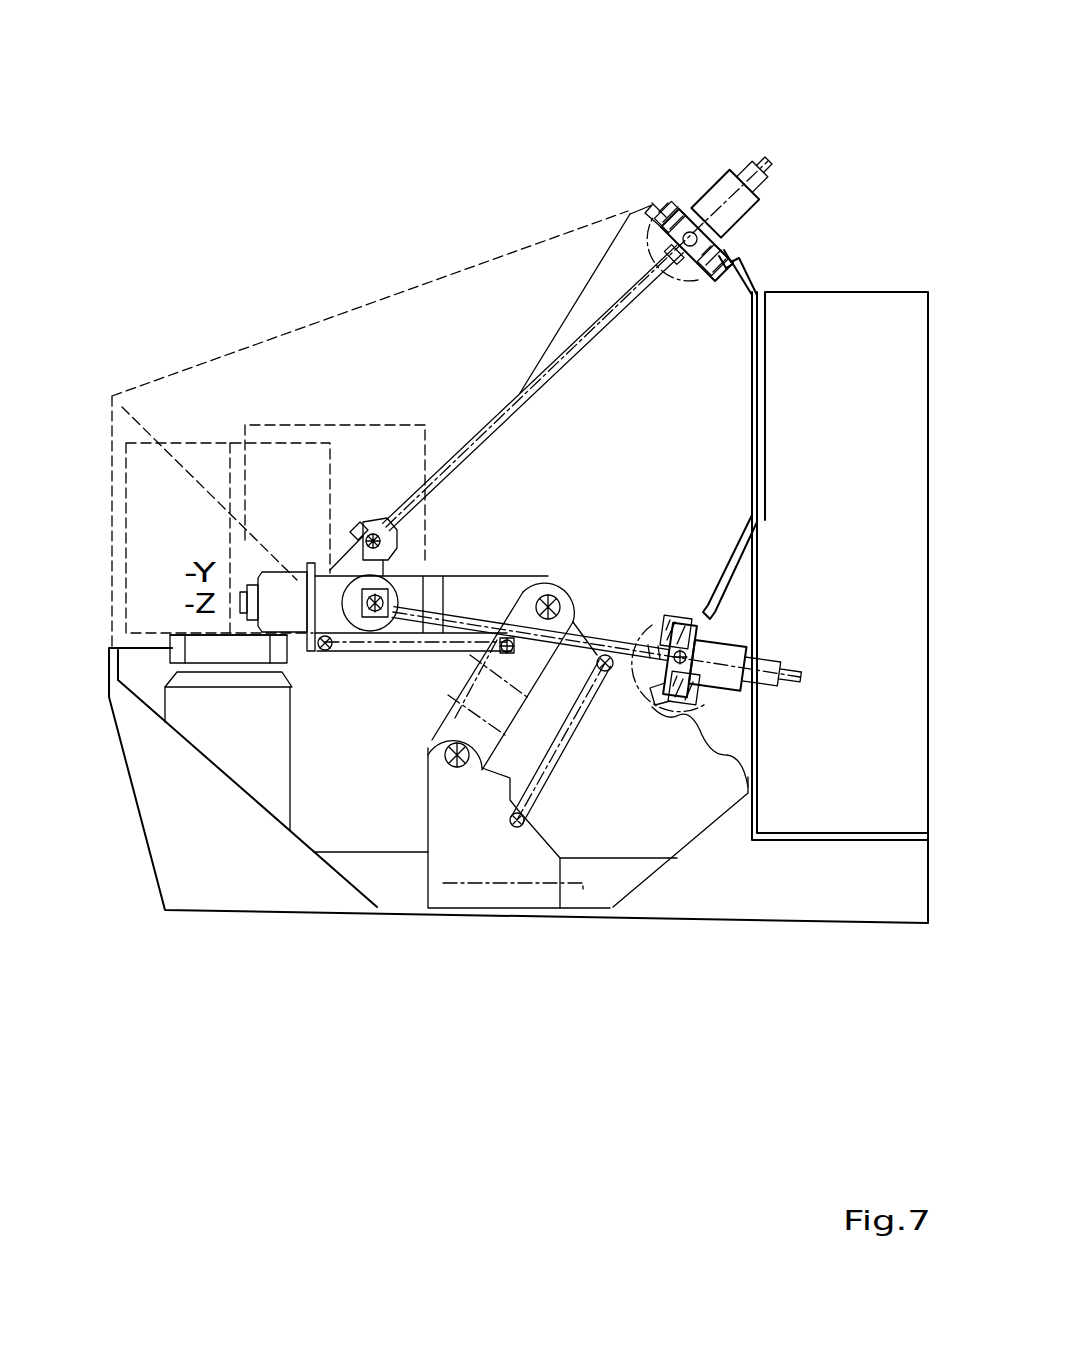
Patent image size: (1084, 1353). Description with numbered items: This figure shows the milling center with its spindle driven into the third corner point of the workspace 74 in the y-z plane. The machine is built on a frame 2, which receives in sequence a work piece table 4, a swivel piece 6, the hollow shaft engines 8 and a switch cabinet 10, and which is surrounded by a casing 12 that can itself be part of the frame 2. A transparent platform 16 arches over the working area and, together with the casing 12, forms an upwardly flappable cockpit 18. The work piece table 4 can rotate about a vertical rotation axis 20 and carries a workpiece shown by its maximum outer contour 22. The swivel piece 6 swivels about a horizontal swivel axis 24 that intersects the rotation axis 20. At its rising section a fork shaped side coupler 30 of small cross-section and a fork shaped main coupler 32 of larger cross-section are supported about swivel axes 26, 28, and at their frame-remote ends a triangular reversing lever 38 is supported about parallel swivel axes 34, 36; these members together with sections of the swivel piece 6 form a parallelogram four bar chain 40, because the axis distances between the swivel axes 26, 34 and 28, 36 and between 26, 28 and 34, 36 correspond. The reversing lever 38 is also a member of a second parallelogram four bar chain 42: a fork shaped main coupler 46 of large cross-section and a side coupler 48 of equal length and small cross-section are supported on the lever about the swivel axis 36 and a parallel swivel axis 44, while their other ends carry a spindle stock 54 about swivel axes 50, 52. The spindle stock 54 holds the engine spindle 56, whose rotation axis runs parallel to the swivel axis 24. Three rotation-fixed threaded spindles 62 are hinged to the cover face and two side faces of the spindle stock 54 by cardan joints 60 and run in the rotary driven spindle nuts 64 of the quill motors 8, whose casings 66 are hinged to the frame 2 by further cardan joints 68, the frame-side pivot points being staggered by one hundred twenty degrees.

The frame 2 is at (185, 875).
The work piece table 4 is at (244, 653).
The swivel piece 6 is at (548, 893).
The hollow shaft engines 8 is at (778, 142).
The switch cabinet 10 is at (795, 322).
The casing 12 is at (728, 548).
The transparent platform 16 is at (509, 252).
The cockpit 18 is at (188, 328).
The vertical rotation axis 20 is at (227, 698).
The maximum outer contour 22 is at (185, 438).
The horizontal swivel axis 24 is at (576, 705).
The swivel axis 26 is at (503, 665).
The swivel axis 28 is at (448, 700).
The side coupler 30 is at (640, 720).
The main coupler 32 is at (612, 676).
The swivel axis 34 is at (683, 757).
The swivel axis 36 is at (541, 588).
The reversing lever 38 is at (585, 582).
The four bar chain 40 is at (490, 760).
The four bar chain 42 is at (479, 590).
The swivel axis 44 is at (485, 670).
The main coupler 46 is at (440, 577).
The side coupler 48 is at (388, 652).
The swivel axis 50 is at (370, 652).
The swivel axis 52 is at (329, 651).
The spindle stock 54 is at (332, 566).
The engine spindle 56 is at (308, 667).
The cardan joints 60 is at (366, 533).
The threaded spindles 62 is at (608, 317).
The spindle nuts 64 is at (747, 170).
The casings 66 is at (717, 187).
The cardan joints 68 is at (677, 197).
The workspace 74 is at (318, 423).